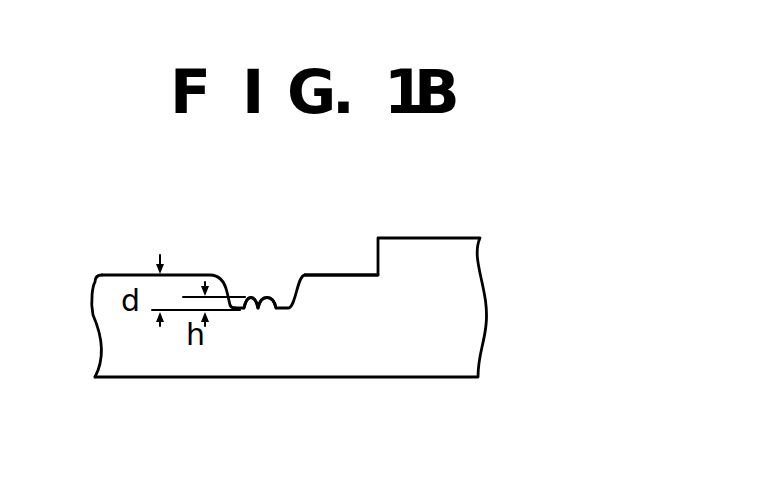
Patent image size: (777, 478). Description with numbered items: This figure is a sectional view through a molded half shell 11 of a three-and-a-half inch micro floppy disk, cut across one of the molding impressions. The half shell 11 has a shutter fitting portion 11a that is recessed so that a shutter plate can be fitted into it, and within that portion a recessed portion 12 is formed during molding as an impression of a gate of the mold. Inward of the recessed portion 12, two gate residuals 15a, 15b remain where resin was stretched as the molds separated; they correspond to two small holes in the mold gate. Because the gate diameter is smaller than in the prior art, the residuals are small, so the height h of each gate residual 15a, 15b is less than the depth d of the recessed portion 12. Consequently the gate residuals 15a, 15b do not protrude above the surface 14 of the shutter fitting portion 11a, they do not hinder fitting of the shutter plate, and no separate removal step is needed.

The half shell 11 is at (289, 327).
The shutter fitting portion 11a is at (332, 273).
The recessed portion 12 is at (273, 279).
The surface of the shutter fitting portion 14 is at (183, 273).
The gate residual 15a is at (247, 308).
The gate residual 15b is at (270, 308).